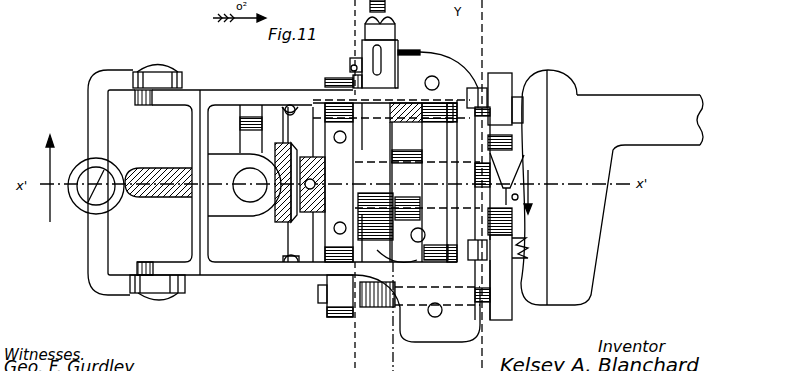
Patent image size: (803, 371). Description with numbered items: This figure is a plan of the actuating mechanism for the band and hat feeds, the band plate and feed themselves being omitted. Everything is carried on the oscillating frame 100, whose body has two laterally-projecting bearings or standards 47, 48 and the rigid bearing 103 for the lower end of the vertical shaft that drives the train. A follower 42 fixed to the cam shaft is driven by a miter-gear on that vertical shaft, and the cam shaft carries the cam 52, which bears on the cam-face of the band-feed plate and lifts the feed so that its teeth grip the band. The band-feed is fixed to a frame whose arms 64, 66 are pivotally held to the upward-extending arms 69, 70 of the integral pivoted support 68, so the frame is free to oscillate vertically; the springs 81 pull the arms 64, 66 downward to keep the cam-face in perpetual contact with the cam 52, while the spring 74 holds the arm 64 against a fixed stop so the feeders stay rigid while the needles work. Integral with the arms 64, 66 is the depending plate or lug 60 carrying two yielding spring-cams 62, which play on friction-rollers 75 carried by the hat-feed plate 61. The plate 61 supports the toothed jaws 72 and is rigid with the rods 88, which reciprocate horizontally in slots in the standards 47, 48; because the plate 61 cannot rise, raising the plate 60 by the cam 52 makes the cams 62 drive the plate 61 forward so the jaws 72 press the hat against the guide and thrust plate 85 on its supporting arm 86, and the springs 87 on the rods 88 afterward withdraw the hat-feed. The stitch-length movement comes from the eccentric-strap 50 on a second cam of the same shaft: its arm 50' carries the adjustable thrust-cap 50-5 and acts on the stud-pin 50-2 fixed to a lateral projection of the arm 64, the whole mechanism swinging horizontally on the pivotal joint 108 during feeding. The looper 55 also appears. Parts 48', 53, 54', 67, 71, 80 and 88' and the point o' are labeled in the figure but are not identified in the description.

The follower 42 is at (282, 218).
The laterally-projecting bearing 47 is at (440, 181).
The laterally-projecting bearing 48 is at (326, 182).
The nut 48' is at (318, 324).
The eccentric-strap 50 is at (407, 182).
The arm of the eccentric-strap 50' is at (420, 57).
The stud-pin 50-2 is at (352, 67).
The adjustable thrust-cap 50-5 is at (387, 48).
The cam 52 is at (400, 150).
The pin 53 is at (353, 60).
The cap nut 54' is at (397, 20).
The looper 55 is at (515, 181).
The depending plate flange 60 is at (475, 213).
The hat-feed-carrying plate 61 is at (500, 73).
The spring-cam 62 is at (481, 88).
The arm of the feed-plate-supporting frame 64 is at (217, 89).
The arm of the feed-plate-supporting frame 66 is at (227, 277).
The frame cavity 67 is at (192, 223).
The pivoted support 68 is at (108, 125).
The upward-extending arm 69 is at (175, 296).
The upward-extending arm 70 is at (176, 72).
The roller 71 is at (512, 143).
The toothed jaw 72 is at (522, 101).
The spring 74 is at (401, 245).
The friction-roller 75 is at (240, 112).
The shaft 80 is at (285, 237).
The spring 81 is at (298, 103).
The guide and thrust plate 85 is at (538, 85).
The supporting-arm 86 is at (640, 120).
The spring 87 is at (378, 307).
The rod 88 is at (377, 322).
The spring seat 88' is at (314, 339).
The oscillating frame 100 is at (150, 170).
The bearing 103 is at (244, 191).
The pivotal joint 108 is at (85, 210).
The axis point o' is at (578, 183).